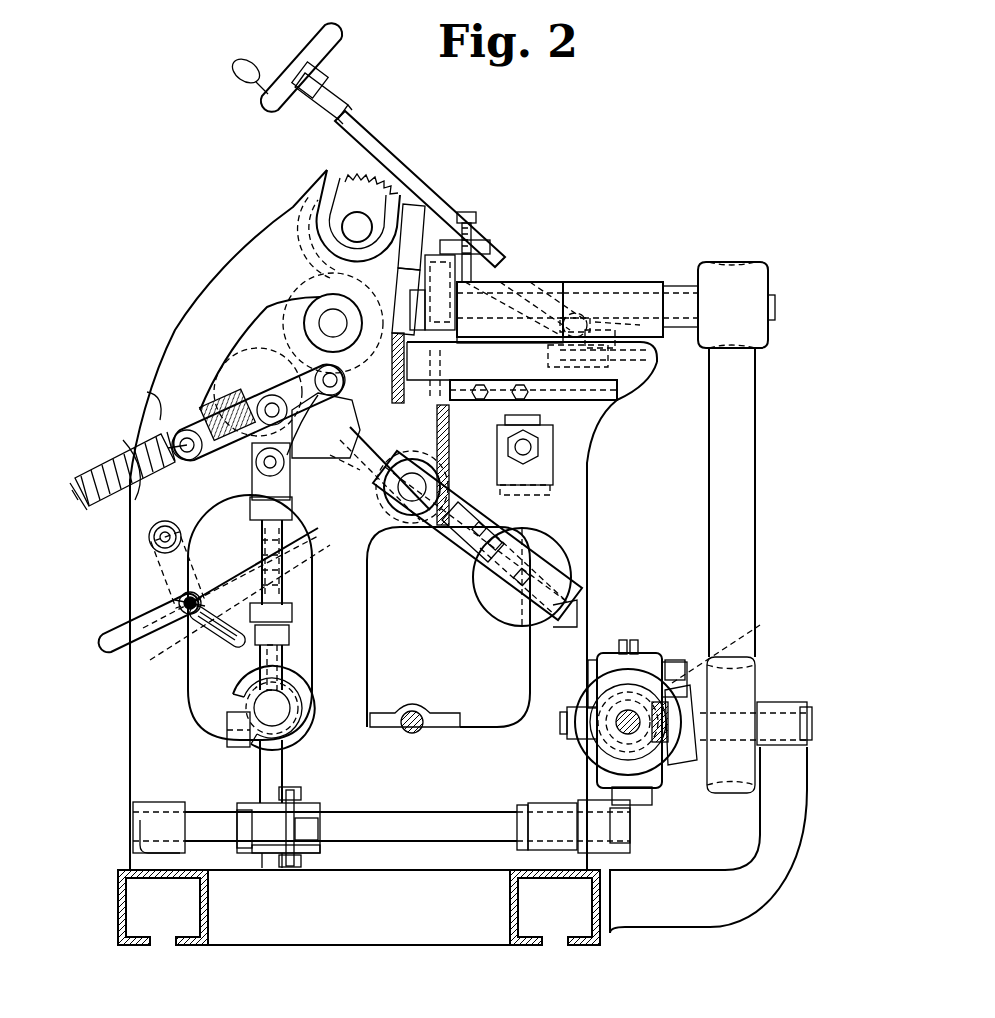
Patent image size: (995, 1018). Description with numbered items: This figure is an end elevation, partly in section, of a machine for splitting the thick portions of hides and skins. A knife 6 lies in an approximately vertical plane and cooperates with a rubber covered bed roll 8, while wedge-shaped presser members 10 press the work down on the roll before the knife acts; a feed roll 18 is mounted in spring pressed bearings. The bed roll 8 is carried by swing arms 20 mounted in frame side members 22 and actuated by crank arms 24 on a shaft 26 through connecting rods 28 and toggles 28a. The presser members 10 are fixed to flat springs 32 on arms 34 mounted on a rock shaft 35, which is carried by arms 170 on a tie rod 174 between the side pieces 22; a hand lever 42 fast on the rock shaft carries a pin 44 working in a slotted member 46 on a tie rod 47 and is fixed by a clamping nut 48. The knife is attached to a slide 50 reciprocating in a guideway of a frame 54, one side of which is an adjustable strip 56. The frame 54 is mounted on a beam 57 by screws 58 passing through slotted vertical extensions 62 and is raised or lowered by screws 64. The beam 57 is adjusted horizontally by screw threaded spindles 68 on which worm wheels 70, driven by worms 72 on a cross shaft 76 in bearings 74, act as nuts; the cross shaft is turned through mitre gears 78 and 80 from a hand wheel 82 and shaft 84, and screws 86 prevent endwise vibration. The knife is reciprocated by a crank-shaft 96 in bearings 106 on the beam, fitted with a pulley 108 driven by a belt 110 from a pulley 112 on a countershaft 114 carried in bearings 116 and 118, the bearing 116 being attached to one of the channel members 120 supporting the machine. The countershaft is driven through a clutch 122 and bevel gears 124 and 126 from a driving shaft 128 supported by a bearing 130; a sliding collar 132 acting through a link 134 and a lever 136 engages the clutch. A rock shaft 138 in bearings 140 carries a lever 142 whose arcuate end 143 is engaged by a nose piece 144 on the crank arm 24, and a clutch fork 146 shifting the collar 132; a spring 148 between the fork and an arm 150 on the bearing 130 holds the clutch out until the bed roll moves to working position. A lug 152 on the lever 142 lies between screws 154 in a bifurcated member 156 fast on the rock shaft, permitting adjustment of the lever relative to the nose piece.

The knife 6 is at (393, 303).
The bed roll 8 is at (300, 312).
The presser members 10 is at (404, 370).
The feed roll 18 is at (350, 190).
The swing arms 20 is at (382, 462).
The side members 22 is at (200, 310).
The crank arms 24 is at (290, 655).
The shaft 26 is at (227, 740).
The connecting rods 28 is at (283, 598).
The toggles 28a is at (285, 430).
The flat springs 32 is at (476, 515).
The arms 34 is at (400, 455).
The rock shaft 35 is at (413, 500).
The hand lever 42 is at (287, 530).
The pin 44 is at (195, 598).
The slotted member 46 is at (225, 642).
The tie rod 47 is at (150, 538).
The clamping nut 48 is at (202, 606).
The slide 50 is at (337, 323).
The frame 54 is at (458, 340).
The adjustable strip 56 is at (403, 243).
The beam 57 is at (500, 440).
The screws 58 is at (432, 292).
The vertical extensions 62 is at (480, 290).
The screws 64 is at (470, 222).
The screw threaded spindles 68 is at (636, 370).
The worm wheels 70 is at (612, 400).
The worms 72 is at (600, 325).
The bearings 74 is at (610, 352).
The cross shaft 76 is at (600, 332).
The mitre gear 78 is at (576, 324).
The mitre gear 80 is at (552, 300).
The hand wheel 82 is at (318, 46).
The shaft 84 is at (375, 140).
The screws 86 is at (480, 400).
The crank-shaft 96 is at (605, 292).
The bearings 106 is at (630, 292).
The pulley 108 is at (762, 284).
The belt 110 is at (745, 446).
The pulley 112 is at (756, 680).
The countershaft 114 is at (800, 722).
The bearing 116 is at (780, 842).
The bearing 118 is at (652, 772).
The channel members 120 is at (192, 945).
The clutch 122 is at (675, 666).
The bevel gear 124 is at (597, 675).
The bevel gear 126 is at (682, 765).
The driving shaft 128 is at (618, 725).
The bearing 130 is at (590, 665).
The sliding collar 132 is at (590, 700).
The link 134 is at (636, 641).
The lever 136 is at (622, 641).
The rock shaft 138 is at (455, 825).
The bearings 140 is at (160, 802).
The lever 142 is at (265, 788).
The shaped free end 143 is at (300, 745).
The nose piece 144 is at (300, 690).
The clutch fork 146 is at (575, 720).
The spring 148 is at (758, 633).
The arm 150 is at (666, 660).
The lug 152 is at (312, 855).
The screws 154 is at (300, 792).
The bifurcated member 156 is at (315, 830).
The arms 170 is at (512, 495).
The tie rod 174 is at (535, 458).